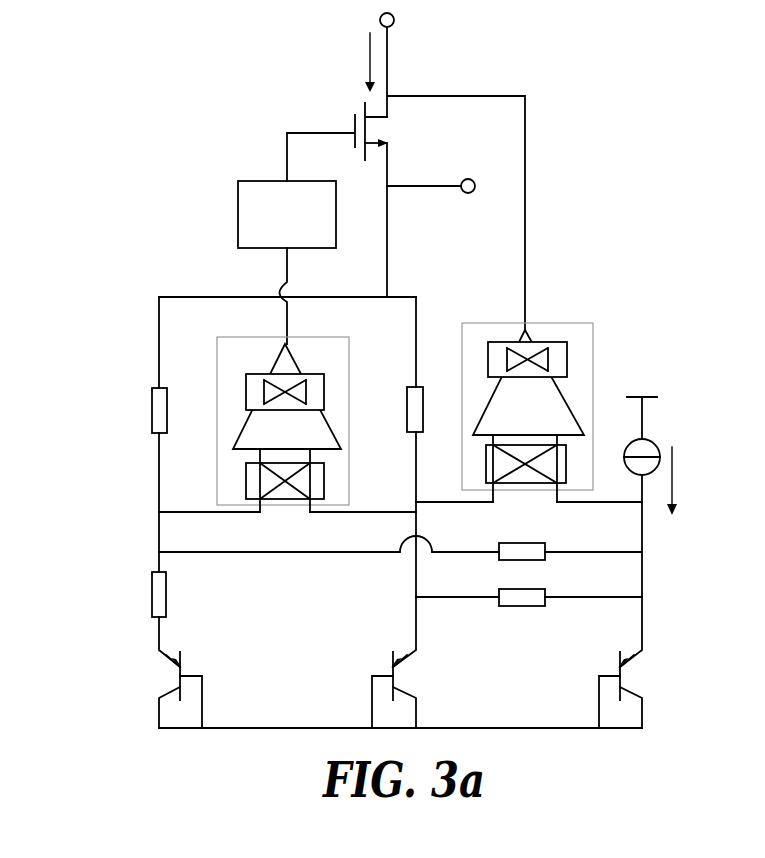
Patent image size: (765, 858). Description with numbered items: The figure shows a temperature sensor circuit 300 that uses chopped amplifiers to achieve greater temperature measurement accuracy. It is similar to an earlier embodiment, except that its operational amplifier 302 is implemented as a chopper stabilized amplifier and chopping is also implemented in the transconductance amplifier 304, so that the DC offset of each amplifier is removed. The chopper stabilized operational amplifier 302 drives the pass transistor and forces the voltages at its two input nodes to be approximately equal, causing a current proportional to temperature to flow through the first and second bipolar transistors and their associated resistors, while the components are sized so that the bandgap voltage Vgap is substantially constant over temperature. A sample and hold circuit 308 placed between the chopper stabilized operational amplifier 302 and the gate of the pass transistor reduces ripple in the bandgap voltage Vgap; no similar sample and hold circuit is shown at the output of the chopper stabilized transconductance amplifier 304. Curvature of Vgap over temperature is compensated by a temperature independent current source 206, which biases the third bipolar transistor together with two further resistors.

The temperature sensor circuit 300 is at (113, 64).
The chopper stabilized operational amplifier 302 is at (349, 360).
The chopper stabilized transconductance amplifier 304 is at (594, 350).
The sample and hold circuit 308 is at (238, 200).
The temperature independent current source 206 is at (647, 438).